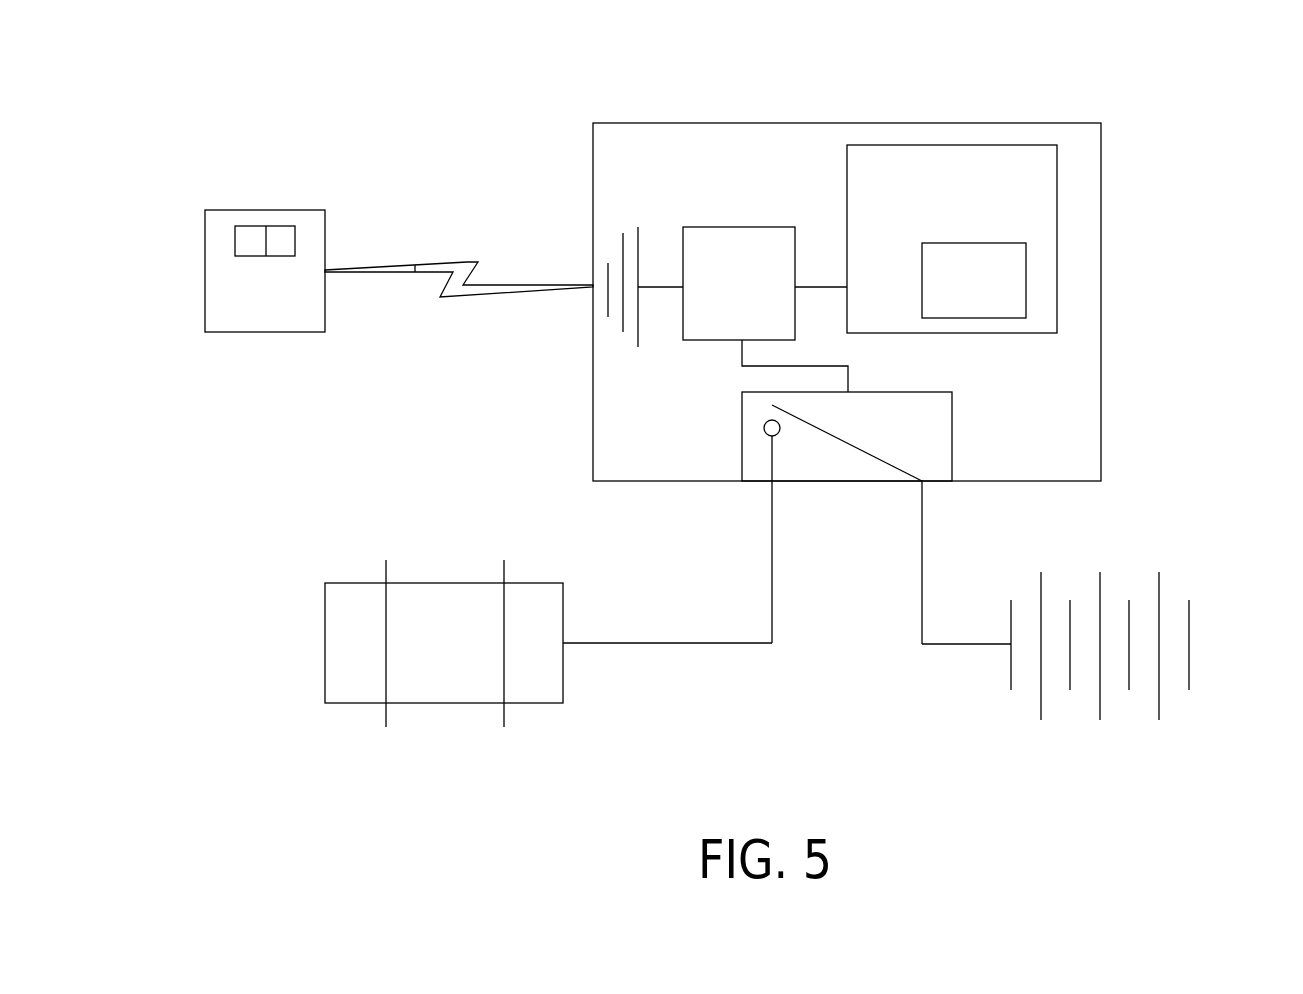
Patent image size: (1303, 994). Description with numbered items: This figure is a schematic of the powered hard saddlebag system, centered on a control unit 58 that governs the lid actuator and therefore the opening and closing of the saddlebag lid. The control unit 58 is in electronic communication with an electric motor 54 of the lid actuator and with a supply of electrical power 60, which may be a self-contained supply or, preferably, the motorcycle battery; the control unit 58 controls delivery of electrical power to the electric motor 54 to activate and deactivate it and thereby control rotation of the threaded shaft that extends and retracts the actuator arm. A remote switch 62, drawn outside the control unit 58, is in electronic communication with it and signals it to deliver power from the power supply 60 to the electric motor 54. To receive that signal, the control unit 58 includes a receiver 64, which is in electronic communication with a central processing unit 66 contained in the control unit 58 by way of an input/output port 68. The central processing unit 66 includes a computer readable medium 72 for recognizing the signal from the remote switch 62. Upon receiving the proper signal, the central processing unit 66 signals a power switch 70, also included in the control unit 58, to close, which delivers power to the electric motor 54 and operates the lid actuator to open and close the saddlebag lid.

The electric motor 54 is at (444, 583).
The control unit 58 is at (1101, 360).
The power supply 60 is at (996, 704).
The remote switch 62 is at (266, 210).
The receiver 64 is at (623, 241).
The central processing unit 66 is at (937, 145).
The input/output port 68 is at (742, 227).
The power switch 70 is at (952, 437).
The computer readable medium 72 is at (1027, 263).